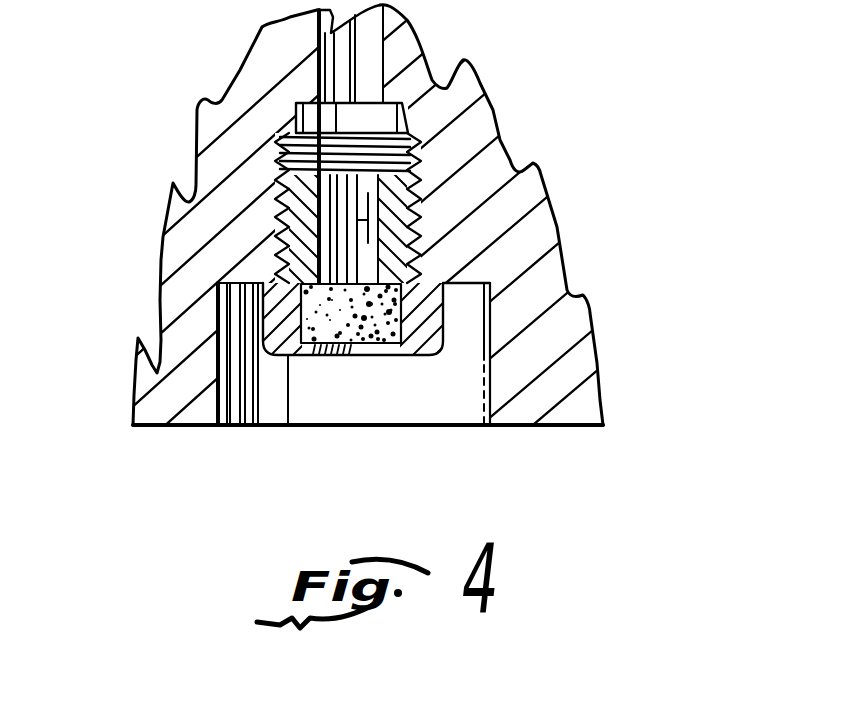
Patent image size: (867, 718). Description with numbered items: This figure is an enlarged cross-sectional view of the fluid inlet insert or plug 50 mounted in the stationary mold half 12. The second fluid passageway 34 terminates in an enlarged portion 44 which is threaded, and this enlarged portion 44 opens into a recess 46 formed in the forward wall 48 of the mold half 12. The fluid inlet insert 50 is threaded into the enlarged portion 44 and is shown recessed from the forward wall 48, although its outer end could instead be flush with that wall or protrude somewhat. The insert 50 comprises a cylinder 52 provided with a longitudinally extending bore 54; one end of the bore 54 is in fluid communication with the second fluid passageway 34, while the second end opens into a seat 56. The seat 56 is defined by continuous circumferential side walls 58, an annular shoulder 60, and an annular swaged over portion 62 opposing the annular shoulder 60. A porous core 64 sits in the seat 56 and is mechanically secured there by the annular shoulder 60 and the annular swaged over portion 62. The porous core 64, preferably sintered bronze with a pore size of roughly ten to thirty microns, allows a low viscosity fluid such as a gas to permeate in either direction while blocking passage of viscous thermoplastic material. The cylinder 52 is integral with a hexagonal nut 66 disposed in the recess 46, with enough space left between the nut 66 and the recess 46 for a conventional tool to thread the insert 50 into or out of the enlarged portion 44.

The stationary mold half 12 is at (536, 230).
The second fluid passageway 34 is at (370, 60).
The enlarged portion 44 is at (415, 140).
The recess 46 is at (482, 396).
The forward wall 48 is at (172, 427).
The fluid inlet insert 50 is at (428, 248).
The cylinder 52 is at (418, 195).
The bore 54 is at (343, 218).
The seat 56 is at (245, 308).
The continuous circumferential side walls 58 is at (405, 318).
The annular shoulder 60 is at (421, 268).
The annular swaged over portion 62 is at (386, 356).
The porous core 64 is at (345, 320).
The hexagonal nut 66 is at (443, 333).